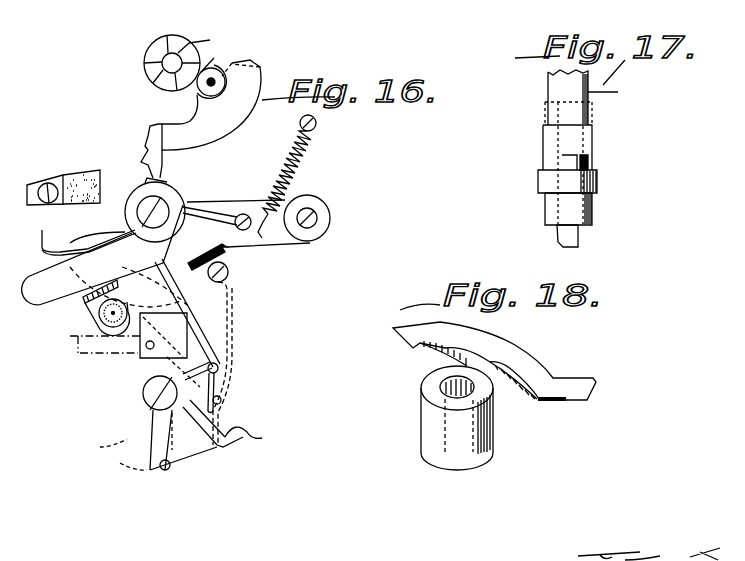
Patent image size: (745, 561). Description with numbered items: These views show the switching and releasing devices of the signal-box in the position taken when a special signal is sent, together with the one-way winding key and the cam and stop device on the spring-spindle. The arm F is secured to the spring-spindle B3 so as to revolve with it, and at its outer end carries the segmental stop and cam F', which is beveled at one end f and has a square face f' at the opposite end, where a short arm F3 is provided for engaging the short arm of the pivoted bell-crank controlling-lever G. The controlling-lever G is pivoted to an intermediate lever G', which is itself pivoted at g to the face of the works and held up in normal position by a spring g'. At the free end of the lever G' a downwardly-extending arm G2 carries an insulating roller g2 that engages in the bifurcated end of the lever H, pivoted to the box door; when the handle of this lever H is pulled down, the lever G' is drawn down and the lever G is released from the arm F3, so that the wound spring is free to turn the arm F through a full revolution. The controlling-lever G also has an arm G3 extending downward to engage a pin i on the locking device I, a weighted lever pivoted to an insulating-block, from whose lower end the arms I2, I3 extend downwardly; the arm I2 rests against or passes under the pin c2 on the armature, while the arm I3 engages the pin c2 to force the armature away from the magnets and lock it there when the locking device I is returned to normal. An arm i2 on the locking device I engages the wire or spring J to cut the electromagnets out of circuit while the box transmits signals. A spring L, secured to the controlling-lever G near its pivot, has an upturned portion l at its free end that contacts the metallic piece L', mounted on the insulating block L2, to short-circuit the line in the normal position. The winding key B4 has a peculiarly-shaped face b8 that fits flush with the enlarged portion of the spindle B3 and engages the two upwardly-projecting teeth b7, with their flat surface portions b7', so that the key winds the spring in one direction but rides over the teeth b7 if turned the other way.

In FIG. 16, the upwardly-projecting teeth b7 is at (168, 65).
In FIG. 17, the upwardly-projecting teeth b7 is at (611, 169).
In FIG. 16, the flat surface portions b7' is at (167, 55).
In FIG. 16, the pin c2 is at (164, 484).
In FIG. 16, the spindle B3 is at (223, 52).
In FIG. 16, the arm F is at (201, 119).
In FIG. 18, the arm F is at (494, 396).
In FIG. 16, the beveled end f is at (268, 68).
In FIG. 18, the beveled end f is at (383, 355).
In FIG. 16, the square face f' is at (134, 131).
In FIG. 18, the square face f' is at (540, 420).
In FIG. 16, the segmental stop and cam F' is at (242, 141).
In FIG. 18, the segmental stop and cam F' is at (522, 334).
In FIG. 16, the short arm F3 is at (163, 170).
In FIG. 18, the short arm F3 is at (577, 376).
In FIG. 16, the spring g' is at (295, 176).
In FIG. 16, the pivot g is at (320, 219).
In FIG. 16, the controlling-lever G is at (166, 241).
In FIG. 16, the intermediate lever G' is at (217, 229).
In FIG. 16, the downwardly-extending arm G2 is at (98, 310).
In FIG. 16, the arm G3 is at (204, 273).
In FIG. 16, the roller g2 is at (100, 326).
In FIG. 16, the lever H is at (110, 370).
In FIG. 16, the locking device I is at (180, 336).
In FIG. 16, the pin i is at (145, 350).
In FIG. 17, the pin i is at (538, 178).
In FIG. 16, the arm i2 is at (240, 373).
In FIG. 16, the wire or spring J is at (235, 320).
In FIG. 16, the arm I3 is at (150, 426).
In FIG. 16, the arm I2 is at (235, 458).
In FIG. 16, the insulating piece or block L2 is at (85, 181).
In FIG. 16, the metallic piece L' is at (56, 205).
In FIG. 16, the upturned portion l is at (83, 237).
In FIG. 16, the spring L is at (35, 259).
In FIG. 17, the key B4 is at (590, 130).
In FIG. 17, the face of the key b8 is at (565, 157).